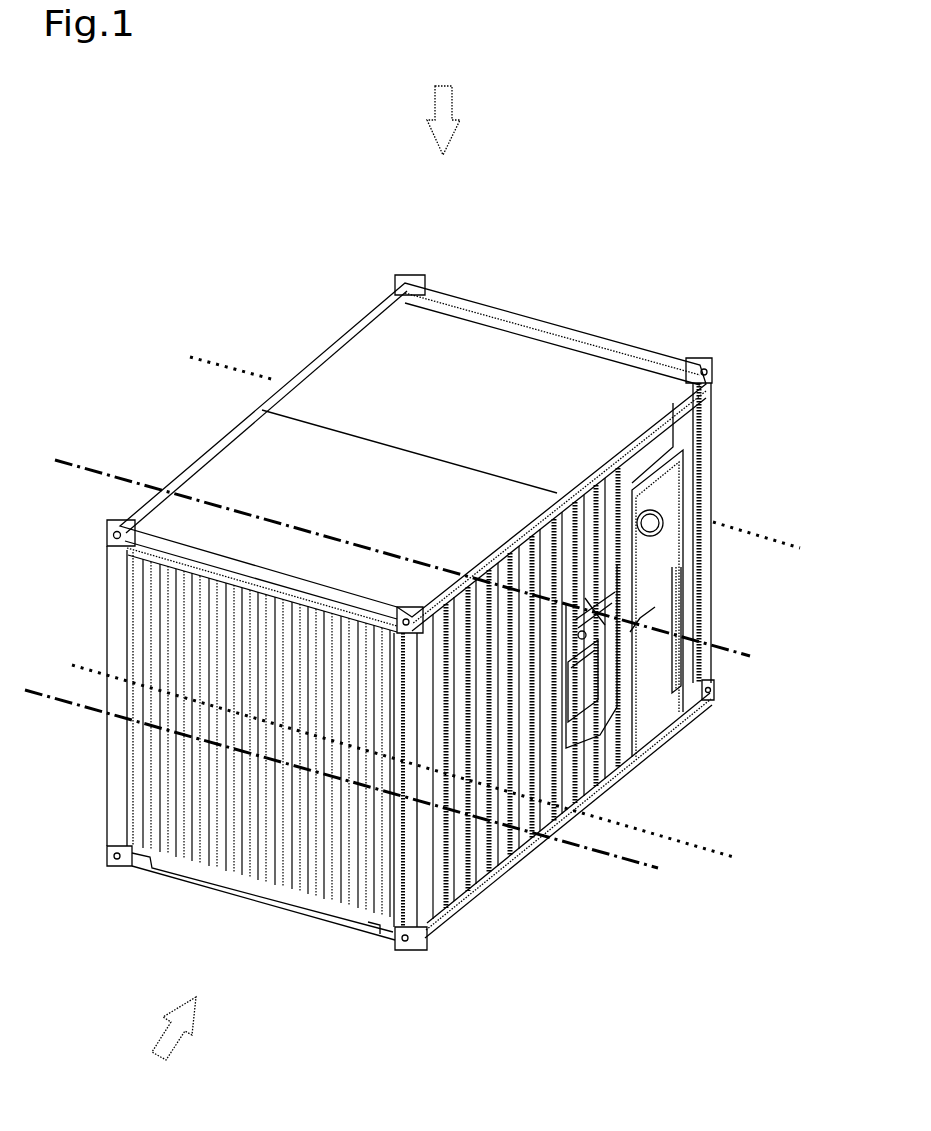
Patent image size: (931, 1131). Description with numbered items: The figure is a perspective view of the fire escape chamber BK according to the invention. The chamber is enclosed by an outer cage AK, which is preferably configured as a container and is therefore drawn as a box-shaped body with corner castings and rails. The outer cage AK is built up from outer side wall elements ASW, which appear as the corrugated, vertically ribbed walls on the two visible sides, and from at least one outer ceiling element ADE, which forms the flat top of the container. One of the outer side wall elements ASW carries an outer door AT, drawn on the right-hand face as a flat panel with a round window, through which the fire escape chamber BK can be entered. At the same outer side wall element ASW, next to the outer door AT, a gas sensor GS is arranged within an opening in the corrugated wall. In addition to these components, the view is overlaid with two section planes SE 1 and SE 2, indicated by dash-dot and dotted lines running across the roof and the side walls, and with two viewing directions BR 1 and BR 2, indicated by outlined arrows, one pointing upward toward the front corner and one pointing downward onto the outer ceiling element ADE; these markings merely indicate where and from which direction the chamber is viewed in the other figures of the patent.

The fire escape chamber BK is at (667, 162).
The outer cage AK is at (544, 314).
The outer ceiling element ADE is at (338, 386).
The outer side wall element ASW is at (467, 872).
The outer door AT is at (640, 712).
The gas sensor GS is at (613, 757).
The first sectional plane SE 1 is at (97, 491).
The second sectional plane SE 2 is at (786, 560).
The first viewing direction BR 1 is at (160, 1044).
The second viewing direction BR 2 is at (449, 102).